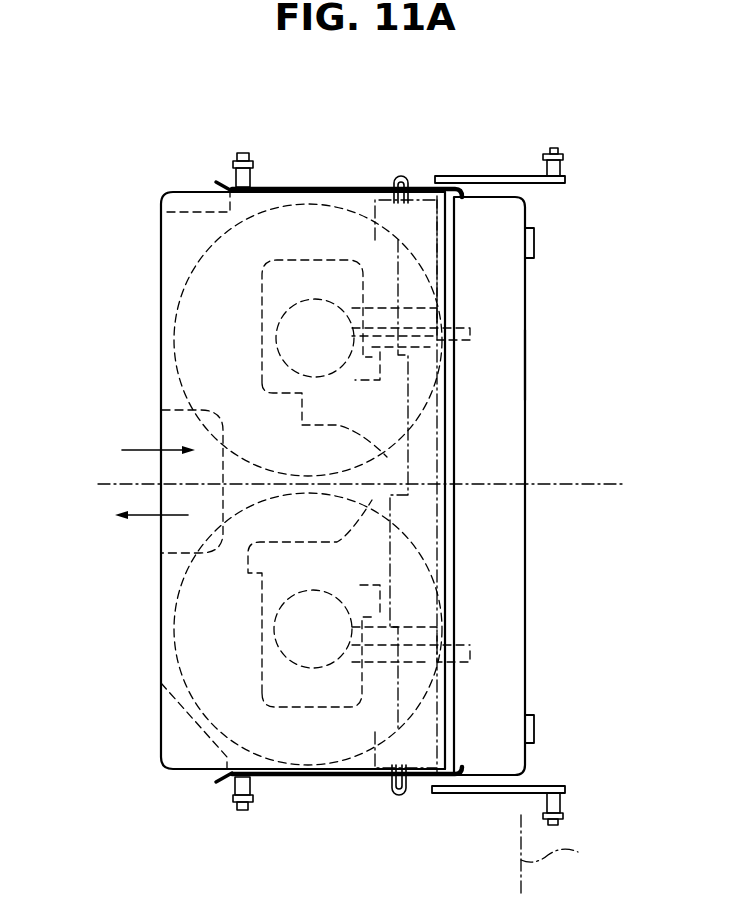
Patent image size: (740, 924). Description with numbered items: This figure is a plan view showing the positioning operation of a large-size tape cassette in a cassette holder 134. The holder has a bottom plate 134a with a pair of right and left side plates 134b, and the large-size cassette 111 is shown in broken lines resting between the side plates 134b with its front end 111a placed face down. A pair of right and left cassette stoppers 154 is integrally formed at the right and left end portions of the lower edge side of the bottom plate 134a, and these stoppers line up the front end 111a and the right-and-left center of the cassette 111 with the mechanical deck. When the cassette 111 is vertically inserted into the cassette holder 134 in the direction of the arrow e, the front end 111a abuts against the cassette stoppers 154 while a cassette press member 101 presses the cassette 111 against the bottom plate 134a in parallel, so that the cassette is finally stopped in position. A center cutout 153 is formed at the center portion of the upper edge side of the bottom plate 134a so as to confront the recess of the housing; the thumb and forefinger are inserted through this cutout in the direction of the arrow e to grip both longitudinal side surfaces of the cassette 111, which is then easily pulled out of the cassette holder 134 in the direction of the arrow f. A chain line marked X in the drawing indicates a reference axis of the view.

The bottom plate 134a is at (315, 482).
The side plates 134b is at (345, 188).
The cassette holder 134 is at (380, 183).
The cassette stoppers 154 is at (536, 238).
The cassette press member 101 is at (437, 264).
The front end 111a is at (526, 364).
The large-size cassette 111 is at (533, 394).
The center cutout 153 is at (187, 410).
The arrow e is at (142, 450).
The arrow f is at (147, 515).
The axis X is at (565, 854).